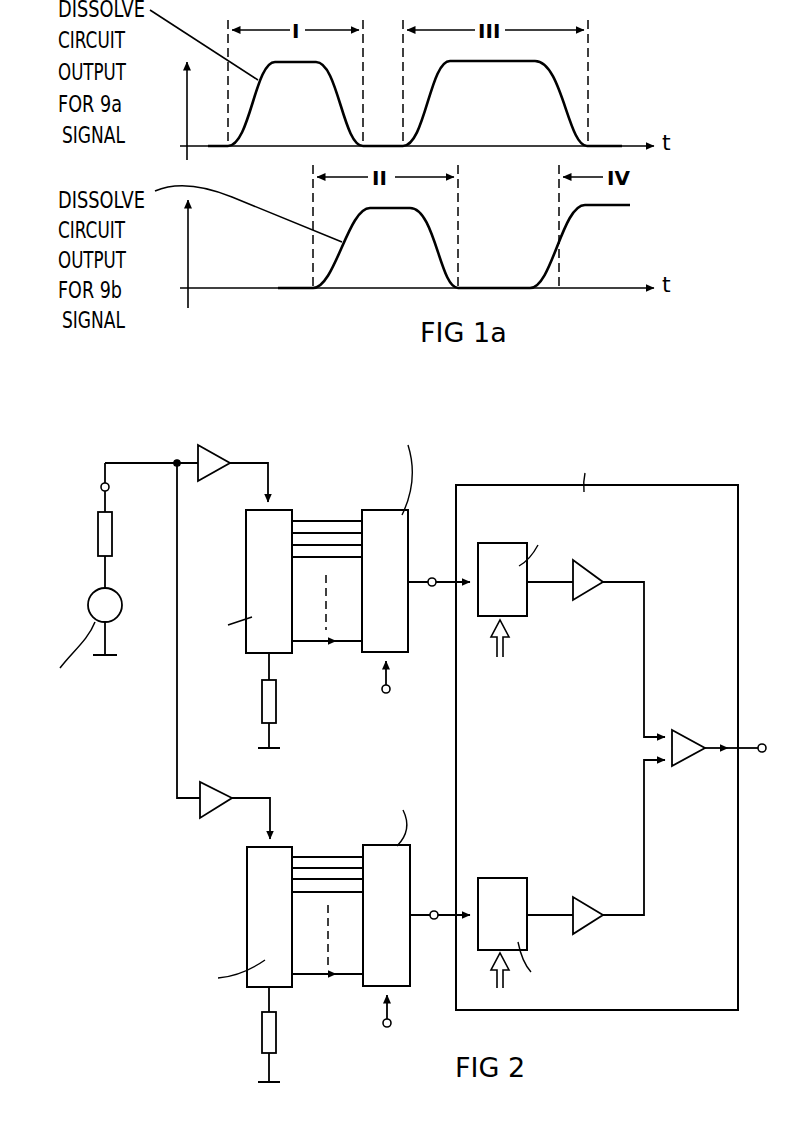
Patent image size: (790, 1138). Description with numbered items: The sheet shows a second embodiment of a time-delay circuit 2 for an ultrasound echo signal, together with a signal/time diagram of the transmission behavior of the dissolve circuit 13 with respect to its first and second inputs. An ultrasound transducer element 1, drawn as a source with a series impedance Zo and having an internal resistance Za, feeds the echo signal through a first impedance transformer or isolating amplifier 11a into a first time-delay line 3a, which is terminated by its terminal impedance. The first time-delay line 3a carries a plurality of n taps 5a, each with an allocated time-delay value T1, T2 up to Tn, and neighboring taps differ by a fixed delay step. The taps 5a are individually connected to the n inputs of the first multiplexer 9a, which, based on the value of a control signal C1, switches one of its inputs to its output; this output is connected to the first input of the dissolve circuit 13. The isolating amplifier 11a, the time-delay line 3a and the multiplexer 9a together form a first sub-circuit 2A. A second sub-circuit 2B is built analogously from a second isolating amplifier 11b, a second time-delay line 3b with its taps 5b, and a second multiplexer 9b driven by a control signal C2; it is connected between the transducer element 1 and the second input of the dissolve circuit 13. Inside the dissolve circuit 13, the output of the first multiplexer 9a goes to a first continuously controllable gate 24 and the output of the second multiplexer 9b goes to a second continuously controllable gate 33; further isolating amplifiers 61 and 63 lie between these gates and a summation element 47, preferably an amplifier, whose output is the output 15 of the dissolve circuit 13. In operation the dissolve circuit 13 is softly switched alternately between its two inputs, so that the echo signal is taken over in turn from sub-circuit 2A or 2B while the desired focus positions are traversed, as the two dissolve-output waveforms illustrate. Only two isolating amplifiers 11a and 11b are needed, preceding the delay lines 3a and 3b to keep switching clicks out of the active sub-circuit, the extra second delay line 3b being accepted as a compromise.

The ultrasound transducer element 1 is at (122, 603).
The impedance Zo is at (112, 533).
The first sub-circuit 2A is at (168, 578).
The second sub-circuit 2B is at (178, 917).
The time-delay circuit 2 is at (328, 762).
The first isolating amplifier 11a is at (209, 449).
The second isolating amplifier 11b is at (209, 787).
The first time-delay line 3a is at (253, 577).
The second time-delay line 3b is at (262, 940).
The internal resistance Za is at (276, 702).
The taps 5a is at (354, 521).
The taps 5b is at (356, 857).
The time-delay value T1 is at (304, 521).
The time-delay value T2 is at (320, 533).
The time-delay value Tn is at (320, 642).
The first multiplexer 9a is at (384, 514).
The second multiplexer 9b is at (381, 848).
The control signal C1 is at (386, 672).
The control input C2 is at (387, 1006).
The dissolve circuit 13 is at (640, 497).
The first continuously controllable gate 24 is at (501, 543).
The second continuously controllable gate 33 is at (500, 878).
The isolating amplifier 61 is at (578, 600).
The isolating amplifier 63 is at (586, 898).
The summation element 47 is at (688, 730).
The output 15 is at (762, 744).